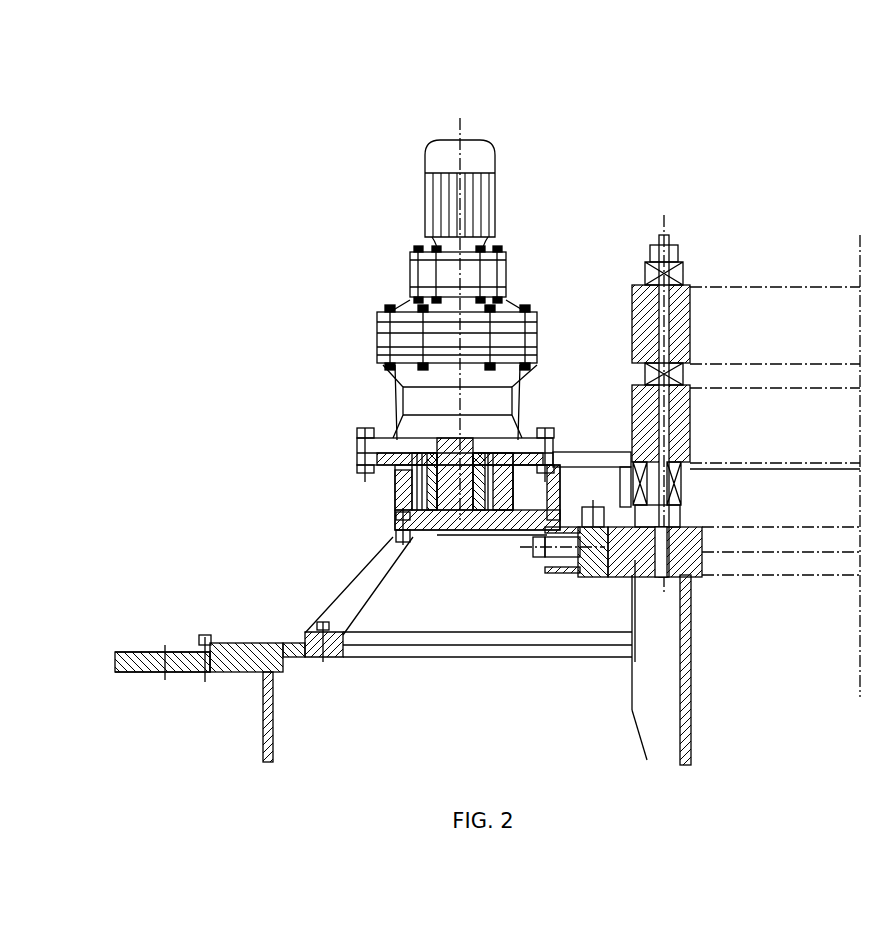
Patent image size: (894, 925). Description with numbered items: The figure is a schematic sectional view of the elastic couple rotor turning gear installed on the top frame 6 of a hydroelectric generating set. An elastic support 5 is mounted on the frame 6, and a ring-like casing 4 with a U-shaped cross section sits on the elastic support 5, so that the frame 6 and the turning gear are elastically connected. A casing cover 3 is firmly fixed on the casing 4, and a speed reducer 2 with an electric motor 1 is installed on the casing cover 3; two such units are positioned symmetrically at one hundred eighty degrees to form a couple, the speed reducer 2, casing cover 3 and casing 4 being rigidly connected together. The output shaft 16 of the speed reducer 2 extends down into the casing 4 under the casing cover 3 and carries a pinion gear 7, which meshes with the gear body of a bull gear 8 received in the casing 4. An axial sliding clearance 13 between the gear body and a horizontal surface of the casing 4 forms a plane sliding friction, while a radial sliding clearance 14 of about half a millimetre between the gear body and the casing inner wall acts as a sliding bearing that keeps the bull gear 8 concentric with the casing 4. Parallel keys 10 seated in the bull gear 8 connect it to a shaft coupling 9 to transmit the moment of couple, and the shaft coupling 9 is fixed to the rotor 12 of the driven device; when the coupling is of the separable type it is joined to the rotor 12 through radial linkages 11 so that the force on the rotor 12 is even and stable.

The electric motor 1 is at (437, 170).
The speed reducer 2 is at (415, 298).
The casing cover 3 is at (385, 452).
The casing 4 is at (393, 497).
The elastic support 5 is at (340, 610).
The frame 6 is at (190, 652).
The pinion gear 7 is at (410, 537).
The bull gear 8 is at (593, 487).
The shaft coupling 9 is at (590, 570).
The parallel keys 10 is at (552, 570).
The radial linkages 11 is at (632, 510).
The rotor 12 is at (618, 573).
The axial sliding clearance 13 is at (360, 465).
The radial sliding clearance 14 is at (442, 455).
The output shaft 16 is at (452, 448).